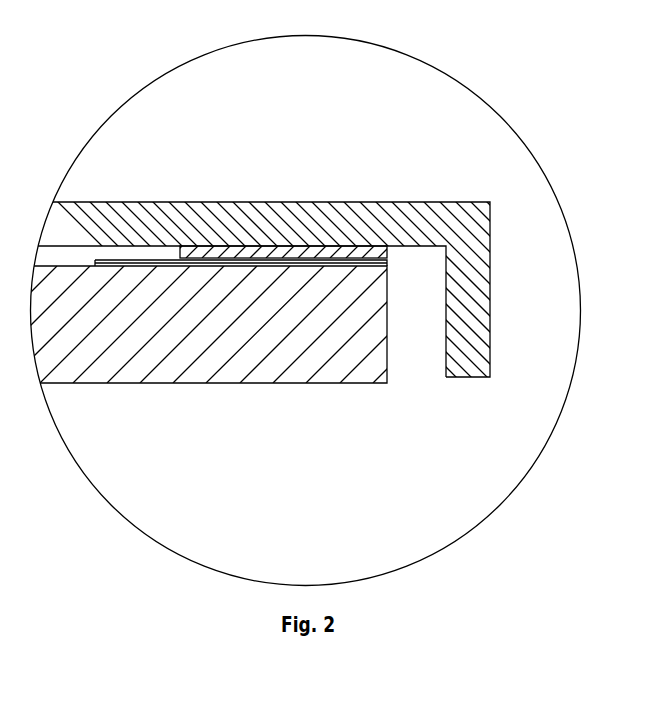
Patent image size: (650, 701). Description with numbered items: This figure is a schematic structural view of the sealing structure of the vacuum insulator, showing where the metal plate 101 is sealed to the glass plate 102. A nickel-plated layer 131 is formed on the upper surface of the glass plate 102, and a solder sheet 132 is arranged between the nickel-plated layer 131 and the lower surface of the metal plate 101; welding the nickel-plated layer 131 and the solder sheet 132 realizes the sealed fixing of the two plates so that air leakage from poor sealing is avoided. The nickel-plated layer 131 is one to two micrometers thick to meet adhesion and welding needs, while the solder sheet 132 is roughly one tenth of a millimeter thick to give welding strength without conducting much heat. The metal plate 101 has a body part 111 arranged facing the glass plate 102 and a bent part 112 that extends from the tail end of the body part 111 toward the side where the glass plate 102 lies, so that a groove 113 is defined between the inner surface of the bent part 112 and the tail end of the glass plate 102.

The metal plate 101 is at (498, 248).
The glass plate 102 is at (273, 360).
The body part 111 is at (403, 230).
The bent part 112 is at (467, 315).
The groove 113 is at (412, 350).
The nickel-plated layer 131 is at (284, 262).
The solder sheet 132 is at (330, 252).